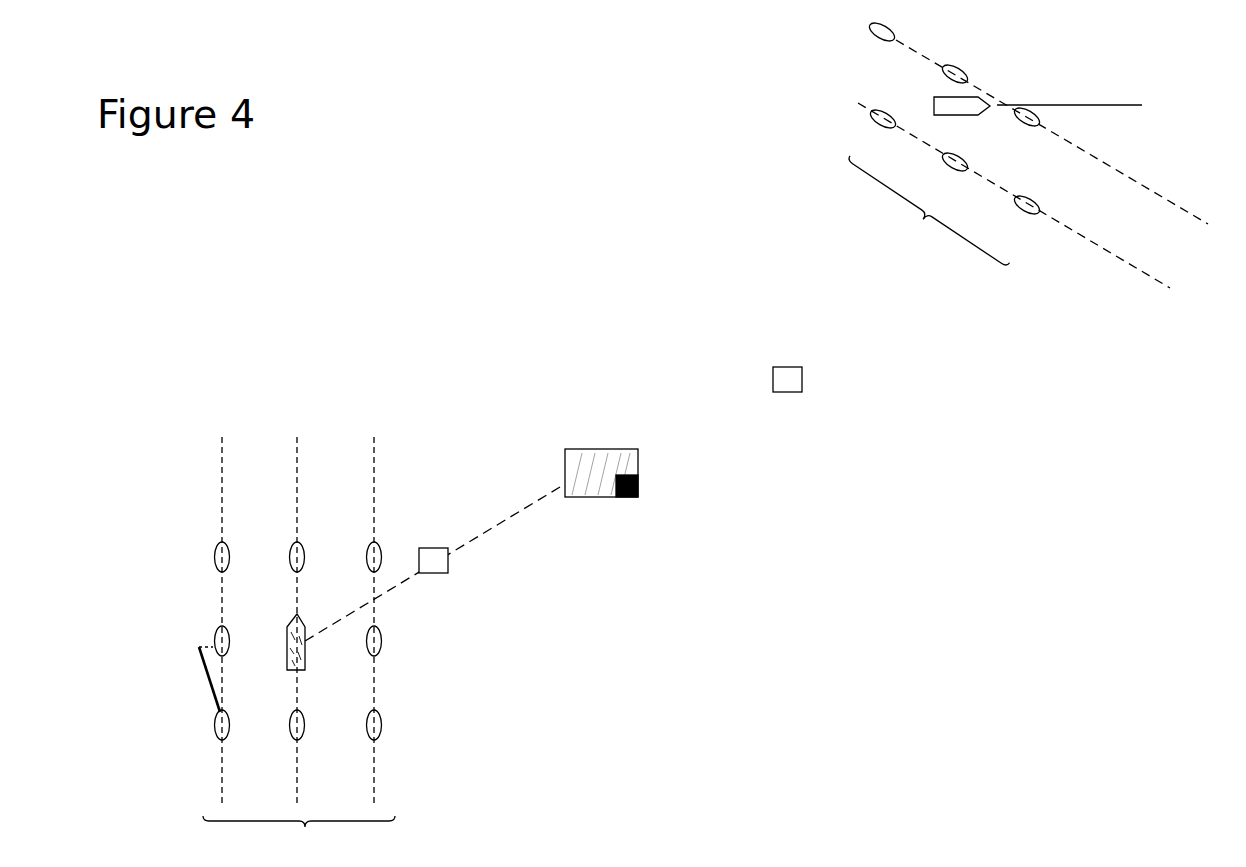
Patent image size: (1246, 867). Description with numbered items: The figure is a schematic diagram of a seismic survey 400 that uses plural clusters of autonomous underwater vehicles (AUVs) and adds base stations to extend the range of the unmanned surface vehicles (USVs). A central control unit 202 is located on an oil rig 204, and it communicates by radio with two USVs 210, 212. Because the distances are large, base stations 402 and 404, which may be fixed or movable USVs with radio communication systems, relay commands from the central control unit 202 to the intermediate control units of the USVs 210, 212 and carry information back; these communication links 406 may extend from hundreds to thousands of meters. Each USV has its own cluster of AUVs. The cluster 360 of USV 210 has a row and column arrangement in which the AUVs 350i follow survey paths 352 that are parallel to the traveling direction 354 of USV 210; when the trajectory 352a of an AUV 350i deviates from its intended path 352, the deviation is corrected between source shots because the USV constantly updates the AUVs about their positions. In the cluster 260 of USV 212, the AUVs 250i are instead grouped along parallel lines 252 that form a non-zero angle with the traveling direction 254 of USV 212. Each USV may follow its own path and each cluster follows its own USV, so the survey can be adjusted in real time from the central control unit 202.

The central control unit 202 is at (638, 486).
The oil rig 204 is at (593, 464).
The unmanned surface vehicle 210 is at (305, 660).
The unmanned surface vehicle 212 is at (973, 95).
The AUV 250i is at (948, 166).
The parallel lines 252 is at (1060, 222).
The traveling direction 254 is at (1105, 105).
The cluster of AUVs 260 is at (926, 214).
The AUV 350i is at (215, 731).
The survey path 352 is at (221, 451).
The trajectory 352a is at (202, 666).
The traveling direction 354 is at (297, 451).
The cluster of AUVs 360 is at (299, 836).
The seismic survey 400 is at (493, 231).
The base station 402 is at (440, 548).
The base station 404 is at (790, 367).
The communication link 406 is at (488, 527).